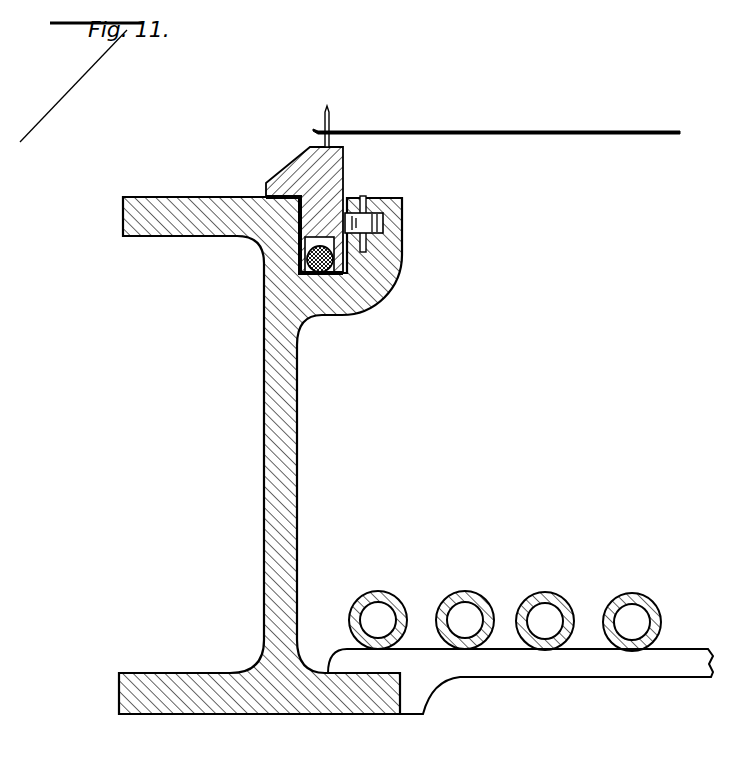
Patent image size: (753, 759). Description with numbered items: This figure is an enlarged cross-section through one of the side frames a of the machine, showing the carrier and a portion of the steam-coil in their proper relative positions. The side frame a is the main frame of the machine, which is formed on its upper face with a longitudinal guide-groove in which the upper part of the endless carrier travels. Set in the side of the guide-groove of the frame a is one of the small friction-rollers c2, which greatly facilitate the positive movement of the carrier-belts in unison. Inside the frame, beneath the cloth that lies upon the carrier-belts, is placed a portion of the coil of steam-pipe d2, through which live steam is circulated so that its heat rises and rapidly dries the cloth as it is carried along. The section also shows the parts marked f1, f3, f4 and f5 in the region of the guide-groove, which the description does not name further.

The main frame a is at (260, 455).
The bracket plate f1 is at (297, 213).
The ball f3 is at (303, 265).
The block f4 is at (304, 207).
The needle f5 is at (331, 118).
The friction-rollers c2 is at (385, 223).
The coil of steam-pipe d2 is at (505, 609).